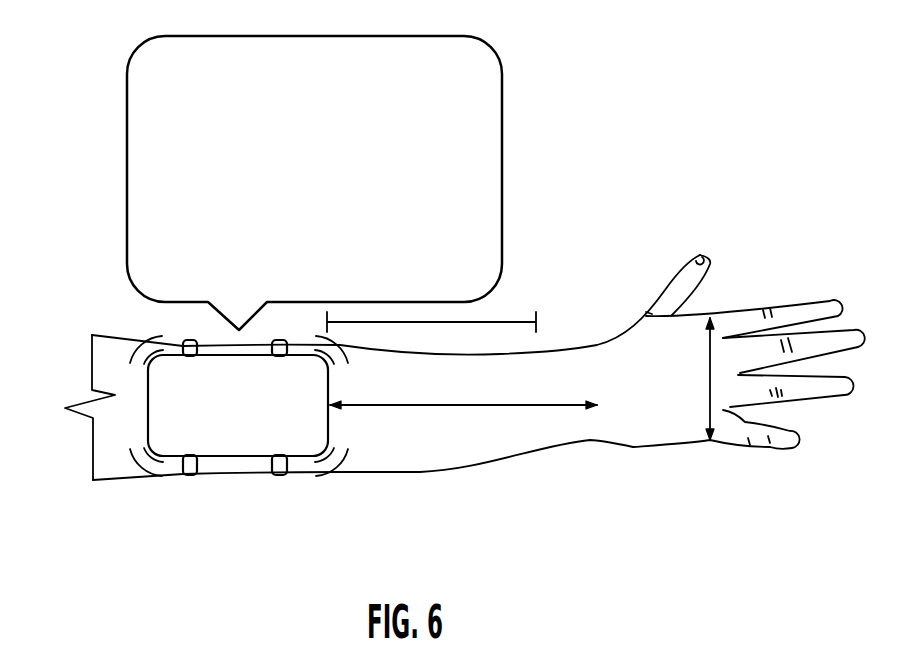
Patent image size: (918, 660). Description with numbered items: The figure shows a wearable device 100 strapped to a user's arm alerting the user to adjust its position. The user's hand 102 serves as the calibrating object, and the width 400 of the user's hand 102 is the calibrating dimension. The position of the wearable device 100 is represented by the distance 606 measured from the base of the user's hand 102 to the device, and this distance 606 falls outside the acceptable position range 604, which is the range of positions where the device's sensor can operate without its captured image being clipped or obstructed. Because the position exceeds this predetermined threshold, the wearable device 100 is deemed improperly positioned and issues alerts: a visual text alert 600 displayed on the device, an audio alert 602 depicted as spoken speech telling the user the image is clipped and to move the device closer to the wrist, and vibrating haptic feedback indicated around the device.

The wearable device 100 is at (147, 412).
The user's hand 102 is at (677, 407).
The width of the user's hand 400 is at (717, 337).
The visual text alert 600 is at (235, 443).
The audio alert 602 is at (155, 70).
The acceptable position range 604 is at (499, 320).
The distance 606 is at (500, 408).